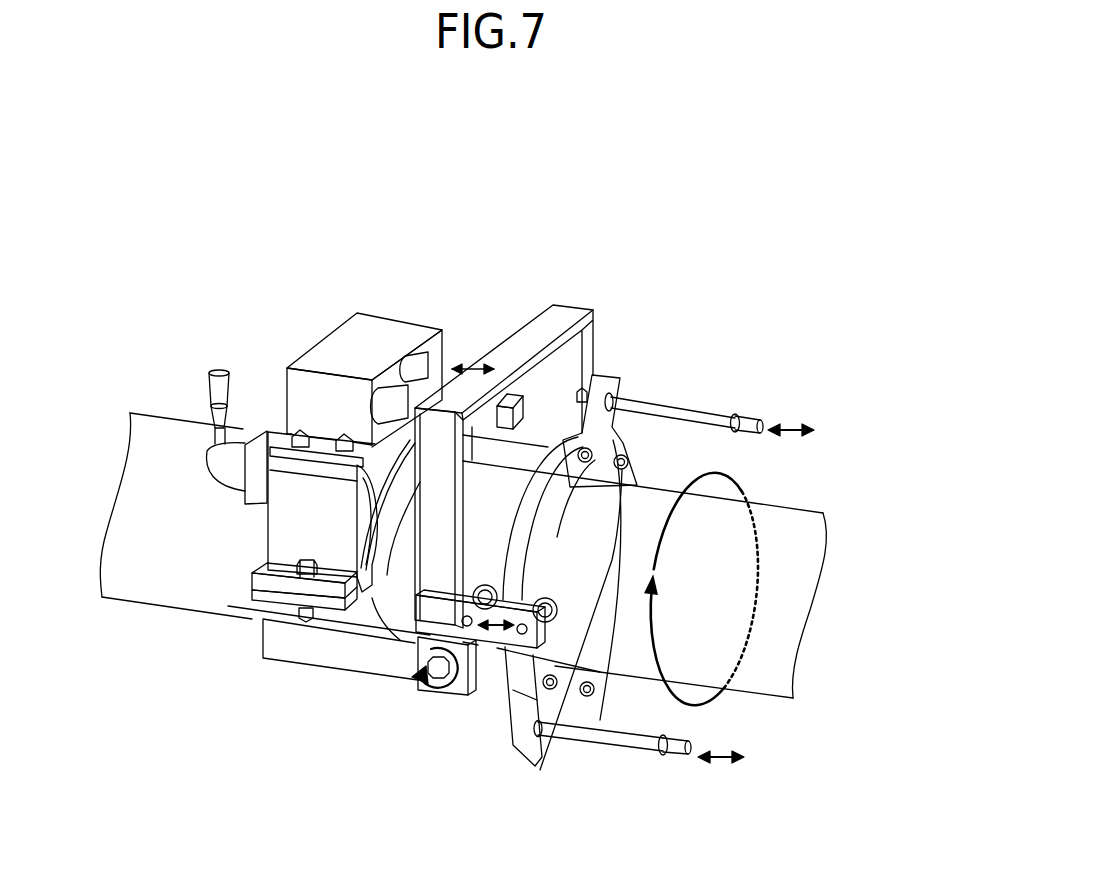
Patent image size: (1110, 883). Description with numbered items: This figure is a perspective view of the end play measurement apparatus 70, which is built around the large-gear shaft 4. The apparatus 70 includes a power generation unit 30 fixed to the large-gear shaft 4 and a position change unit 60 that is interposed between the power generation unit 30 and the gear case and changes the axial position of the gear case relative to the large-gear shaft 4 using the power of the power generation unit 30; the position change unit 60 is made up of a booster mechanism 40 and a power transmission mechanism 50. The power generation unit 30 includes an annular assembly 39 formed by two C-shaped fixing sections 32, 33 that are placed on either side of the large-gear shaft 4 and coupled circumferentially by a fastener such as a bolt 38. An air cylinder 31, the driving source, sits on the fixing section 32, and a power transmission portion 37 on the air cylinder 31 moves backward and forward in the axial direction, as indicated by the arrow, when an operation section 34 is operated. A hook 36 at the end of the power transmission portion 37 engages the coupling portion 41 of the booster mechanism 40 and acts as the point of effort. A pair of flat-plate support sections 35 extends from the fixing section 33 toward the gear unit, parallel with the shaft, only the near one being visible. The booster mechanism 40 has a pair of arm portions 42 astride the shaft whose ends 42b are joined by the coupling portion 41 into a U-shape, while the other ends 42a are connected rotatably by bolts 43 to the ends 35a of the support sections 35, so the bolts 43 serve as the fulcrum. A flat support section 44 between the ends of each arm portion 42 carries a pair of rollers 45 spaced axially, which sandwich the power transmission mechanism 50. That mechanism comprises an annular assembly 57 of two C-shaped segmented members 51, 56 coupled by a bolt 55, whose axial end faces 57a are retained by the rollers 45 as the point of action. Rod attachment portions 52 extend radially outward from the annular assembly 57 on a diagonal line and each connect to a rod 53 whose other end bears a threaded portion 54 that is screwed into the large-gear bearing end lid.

The large-gear shaft 4 is at (133, 587).
The end play measurement apparatus 70 is at (572, 163).
The power generation unit 30 is at (375, 330).
The air cylinder 31 is at (338, 346).
The fixing section 32 is at (280, 545).
The fixing section 33 is at (253, 600).
The annular assembly 39 is at (150, 682).
The operation section 34 is at (219, 370).
The support section 35 is at (290, 652).
The end of support section 35a is at (478, 645).
The hook 36 is at (527, 413).
The power transmission portion 37 is at (476, 342).
The bolt 38 is at (298, 577).
The position change unit 60 is at (632, 203).
The booster mechanism 40 is at (527, 338).
The coupling portion 41 is at (560, 312).
The arm portion 42 is at (430, 543).
The other end of arm portion 42a is at (418, 688).
The end of arm portion 42b is at (428, 437).
The bolt 43 is at (431, 693).
The support section 44 is at (420, 645).
The roller 45 is at (497, 660).
The power transmission mechanism 50 is at (600, 377).
The segmented member 51 is at (512, 745).
The rod attachment portion 52 is at (618, 382).
The rod 53 is at (690, 407).
The threaded portion 54 is at (748, 418).
The bolt 55 is at (596, 693).
The segmented member 56 is at (540, 770).
The annular assembly 57 is at (553, 822).
The axial end face 57a is at (610, 452).